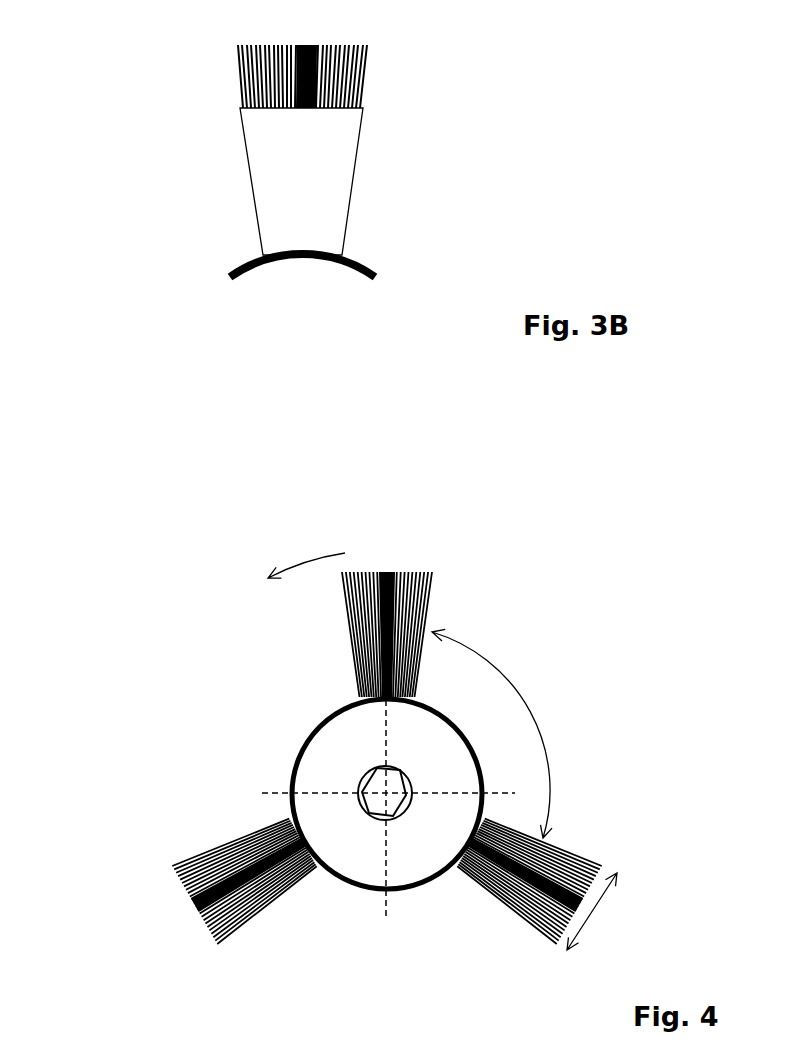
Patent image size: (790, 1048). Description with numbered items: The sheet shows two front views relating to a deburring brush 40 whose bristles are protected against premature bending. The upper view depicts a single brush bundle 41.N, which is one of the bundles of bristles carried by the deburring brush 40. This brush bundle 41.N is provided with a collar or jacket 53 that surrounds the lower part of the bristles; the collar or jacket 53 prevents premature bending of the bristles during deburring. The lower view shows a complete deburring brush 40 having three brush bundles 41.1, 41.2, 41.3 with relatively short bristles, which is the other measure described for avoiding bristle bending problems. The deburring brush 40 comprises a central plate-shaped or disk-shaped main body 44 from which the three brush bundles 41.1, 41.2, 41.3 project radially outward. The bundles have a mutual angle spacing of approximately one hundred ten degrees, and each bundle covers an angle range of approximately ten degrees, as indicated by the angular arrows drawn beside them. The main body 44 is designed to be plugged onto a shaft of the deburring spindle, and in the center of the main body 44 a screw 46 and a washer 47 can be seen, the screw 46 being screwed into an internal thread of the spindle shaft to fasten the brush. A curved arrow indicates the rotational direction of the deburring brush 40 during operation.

In FIG. 3B, the brush bundle 41.N is at (165, 32).
In FIG. 3B, the collar or jacket 53 is at (335, 190).
In FIG. 4, the deburring brush 40 is at (84, 571).
In FIG. 4, the brush bundle 41.1 is at (432, 553).
In FIG. 4, the brush bundle 41.2 is at (618, 865).
In FIG. 4, the brush bundle 41.3 is at (162, 896).
In FIG. 4, the main body 44 is at (365, 868).
In FIG. 4, the screw 46 is at (372, 790).
In FIG. 4, the washer 47 is at (365, 772).